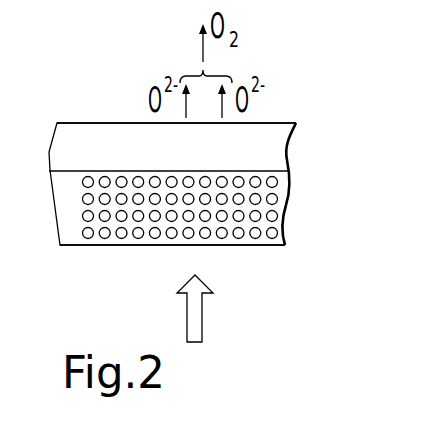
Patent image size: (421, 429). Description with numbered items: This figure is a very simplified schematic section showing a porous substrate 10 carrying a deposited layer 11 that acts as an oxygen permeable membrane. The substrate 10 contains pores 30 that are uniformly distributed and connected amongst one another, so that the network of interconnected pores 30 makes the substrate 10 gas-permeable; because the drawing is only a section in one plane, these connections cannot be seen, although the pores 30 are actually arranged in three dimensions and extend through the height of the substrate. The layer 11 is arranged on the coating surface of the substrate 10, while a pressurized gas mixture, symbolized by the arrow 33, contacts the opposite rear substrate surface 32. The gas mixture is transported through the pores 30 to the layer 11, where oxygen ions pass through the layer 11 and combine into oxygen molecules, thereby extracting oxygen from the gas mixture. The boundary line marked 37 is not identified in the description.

The porous substrate 10 is at (283, 191).
The layer 11 is at (273, 147).
The pores 30 is at (256, 229).
The rear substrate surface 32 is at (107, 245).
The arrow 33 is at (197, 329).
The separating layer 37 is at (93, 171).